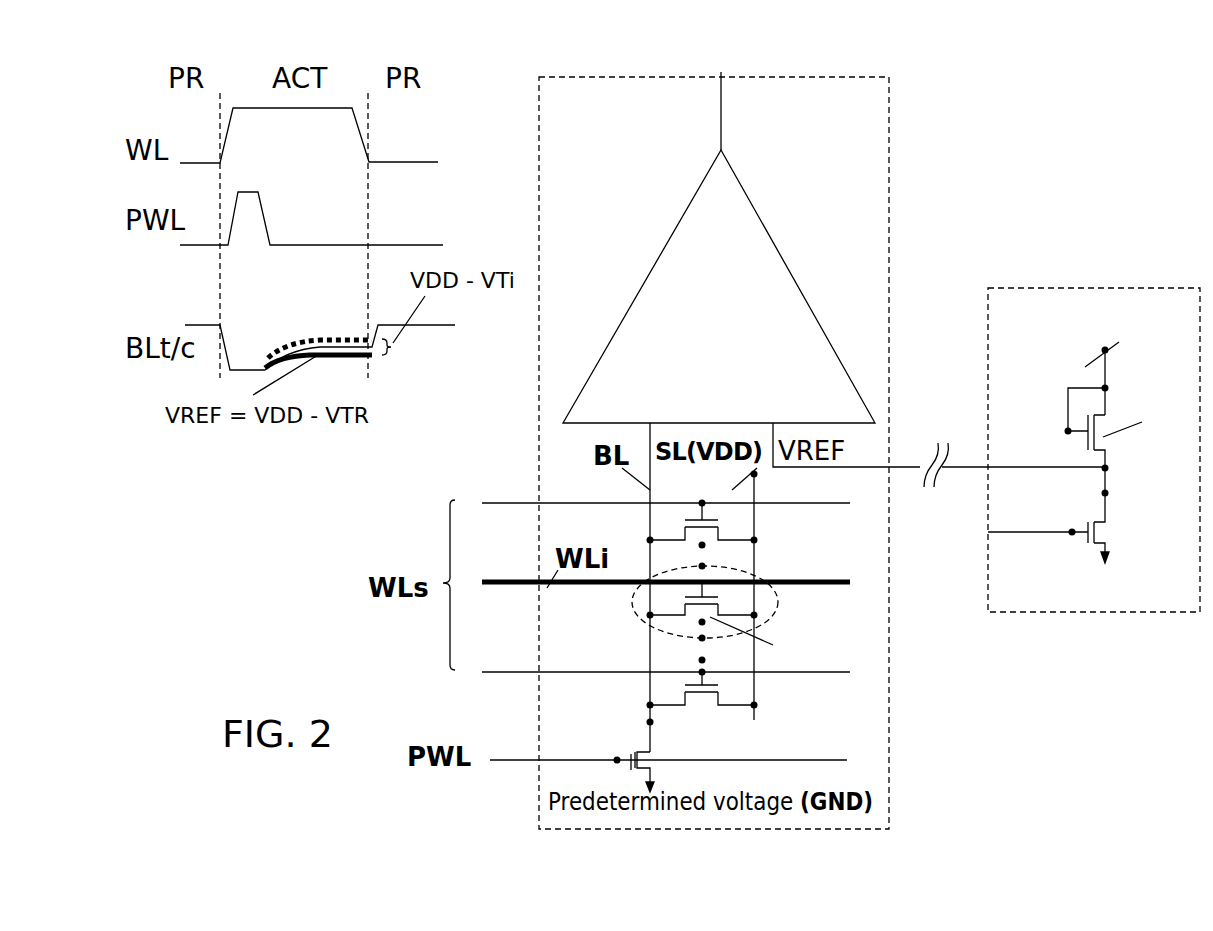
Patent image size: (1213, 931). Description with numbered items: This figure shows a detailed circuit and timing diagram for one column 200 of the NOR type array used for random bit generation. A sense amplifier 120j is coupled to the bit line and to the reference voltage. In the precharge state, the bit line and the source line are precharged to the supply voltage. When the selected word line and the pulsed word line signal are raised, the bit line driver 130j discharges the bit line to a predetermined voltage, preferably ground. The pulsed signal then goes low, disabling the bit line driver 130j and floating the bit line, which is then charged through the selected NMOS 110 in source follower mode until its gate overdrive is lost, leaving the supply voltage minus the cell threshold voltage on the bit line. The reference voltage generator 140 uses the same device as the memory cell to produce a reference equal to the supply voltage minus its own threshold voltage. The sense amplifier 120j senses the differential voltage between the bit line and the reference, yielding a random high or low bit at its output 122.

The column 200 is at (890, 178).
The sense amplifier 120j is at (719, 286).
The output 122 is at (721, 130).
The NMOS 110 is at (760, 568).
The BL driver 130j is at (633, 752).
The reference voltage generator 140 is at (1032, 284).